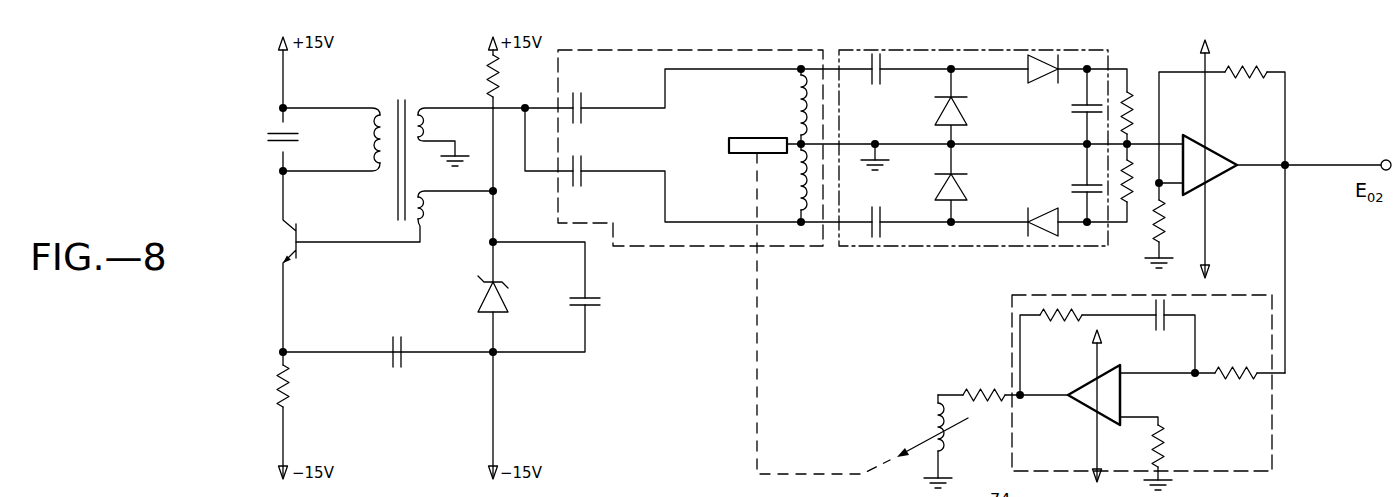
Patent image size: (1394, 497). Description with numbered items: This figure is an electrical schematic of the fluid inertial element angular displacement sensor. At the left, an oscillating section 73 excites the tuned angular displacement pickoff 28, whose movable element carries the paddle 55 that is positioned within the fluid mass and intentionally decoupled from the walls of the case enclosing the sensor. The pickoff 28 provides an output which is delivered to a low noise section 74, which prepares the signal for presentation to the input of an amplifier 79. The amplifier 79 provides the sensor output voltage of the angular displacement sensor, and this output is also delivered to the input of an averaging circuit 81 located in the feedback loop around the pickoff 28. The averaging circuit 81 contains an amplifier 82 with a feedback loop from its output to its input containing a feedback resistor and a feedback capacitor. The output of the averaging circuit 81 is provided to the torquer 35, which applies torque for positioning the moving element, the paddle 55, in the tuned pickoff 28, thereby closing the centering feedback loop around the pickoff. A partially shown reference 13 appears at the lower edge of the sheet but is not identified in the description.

The oscillating section 73 is at (250, 290).
The angular displacement pickoff 28 is at (724, 262).
The paddle 55 is at (745, 138).
The low noise section 74 is at (995, 246).
The amplifier 79 is at (1213, 147).
The torquer 35 is at (925, 425).
The amplifier 82 is at (1085, 413).
The averaging circuit 81 is at (1168, 396).
The sensor 13 is at (665, 493).